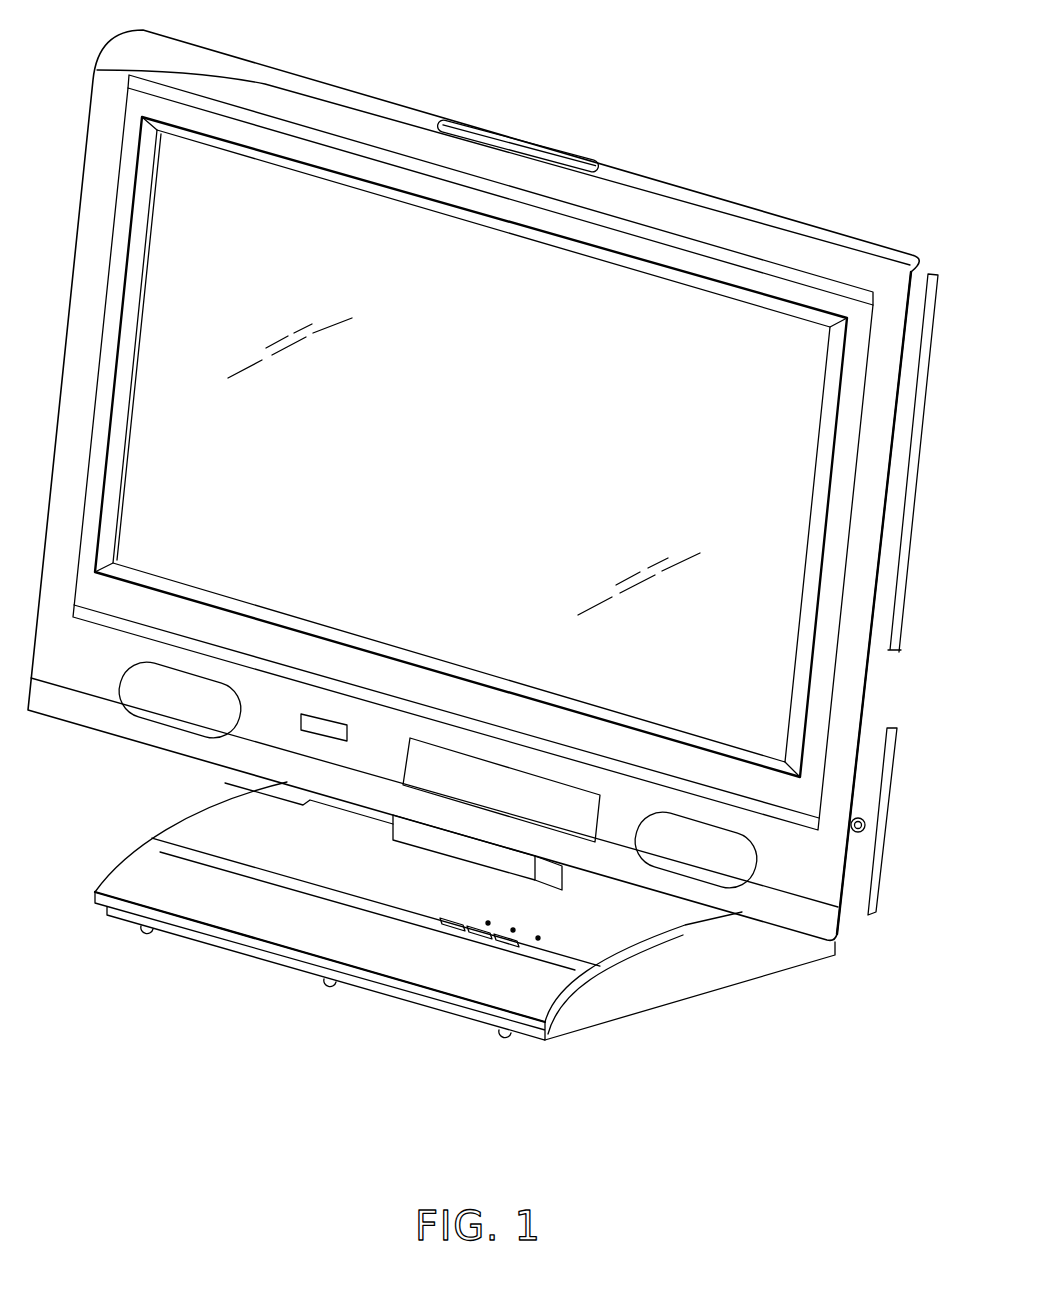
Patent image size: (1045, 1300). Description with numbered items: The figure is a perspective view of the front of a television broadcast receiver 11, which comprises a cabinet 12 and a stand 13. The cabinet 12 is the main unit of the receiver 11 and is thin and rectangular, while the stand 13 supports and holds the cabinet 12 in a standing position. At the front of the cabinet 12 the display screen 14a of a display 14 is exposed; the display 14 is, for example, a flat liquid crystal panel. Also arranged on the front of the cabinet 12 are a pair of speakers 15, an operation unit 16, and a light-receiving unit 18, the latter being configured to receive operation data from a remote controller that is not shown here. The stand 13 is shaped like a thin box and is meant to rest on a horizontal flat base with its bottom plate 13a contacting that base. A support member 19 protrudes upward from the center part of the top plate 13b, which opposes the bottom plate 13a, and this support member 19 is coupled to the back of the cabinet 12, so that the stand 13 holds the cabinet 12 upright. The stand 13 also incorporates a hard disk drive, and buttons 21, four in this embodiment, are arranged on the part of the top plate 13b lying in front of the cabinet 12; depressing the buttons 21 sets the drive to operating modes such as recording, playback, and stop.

The television broadcast receiver 11 is at (822, 157).
The cabinet 12 is at (714, 196).
The stand 13 is at (743, 962).
The bottom plate 13a is at (598, 1028).
The top plate 13b is at (230, 822).
The display 14 is at (265, 127).
The display screen 14a is at (365, 258).
The speakers 15 is at (122, 680).
The operation unit 16 is at (413, 762).
The light-receiving unit 18 is at (302, 718).
The support member 19 is at (423, 842).
The buttons 21 is at (500, 942).